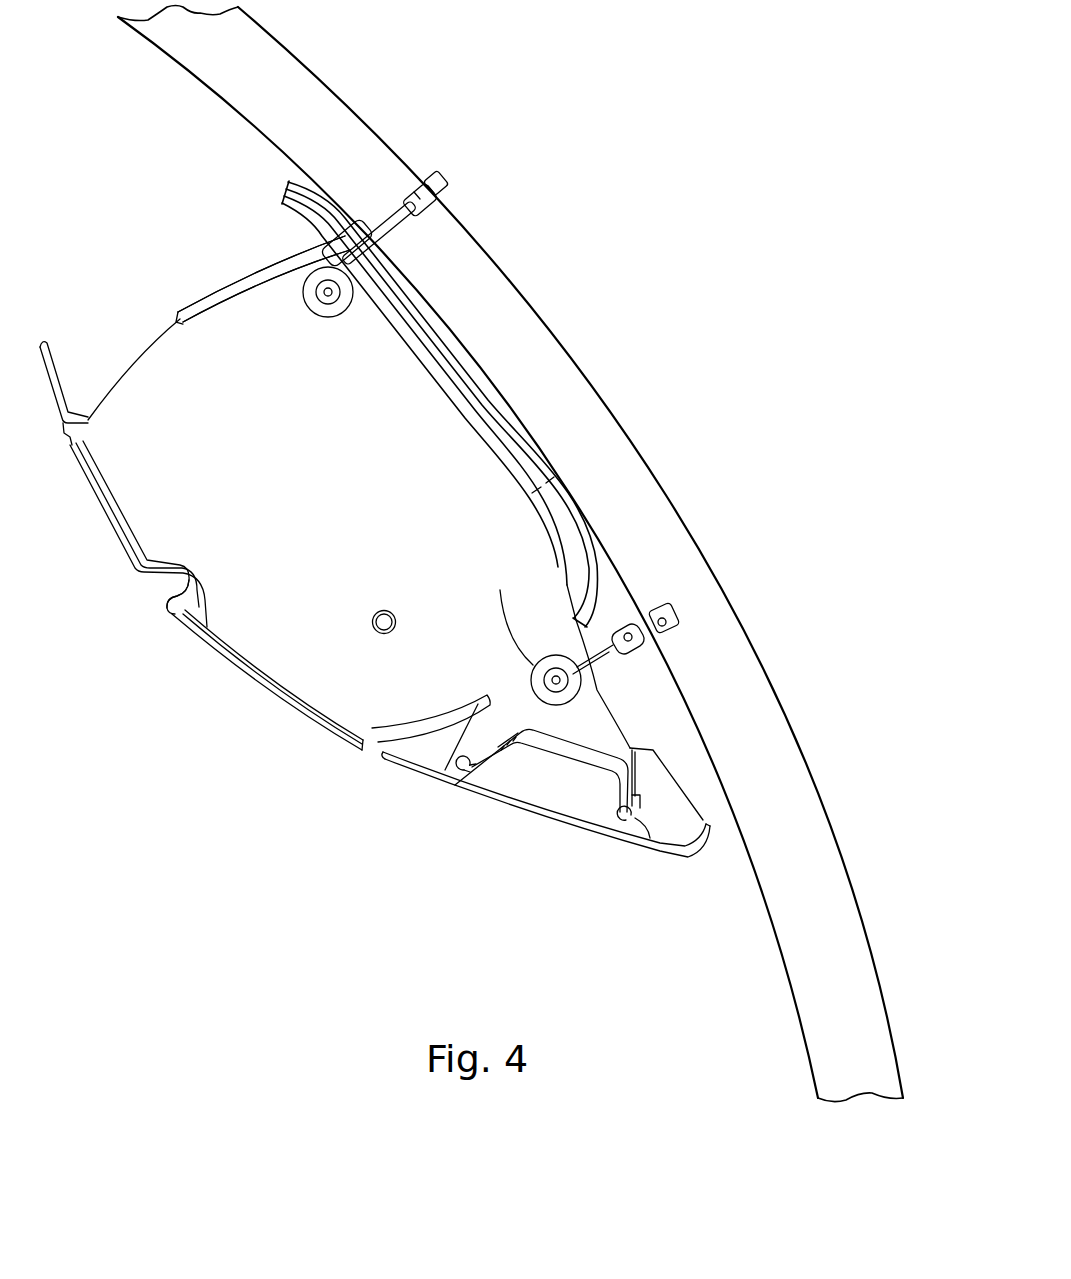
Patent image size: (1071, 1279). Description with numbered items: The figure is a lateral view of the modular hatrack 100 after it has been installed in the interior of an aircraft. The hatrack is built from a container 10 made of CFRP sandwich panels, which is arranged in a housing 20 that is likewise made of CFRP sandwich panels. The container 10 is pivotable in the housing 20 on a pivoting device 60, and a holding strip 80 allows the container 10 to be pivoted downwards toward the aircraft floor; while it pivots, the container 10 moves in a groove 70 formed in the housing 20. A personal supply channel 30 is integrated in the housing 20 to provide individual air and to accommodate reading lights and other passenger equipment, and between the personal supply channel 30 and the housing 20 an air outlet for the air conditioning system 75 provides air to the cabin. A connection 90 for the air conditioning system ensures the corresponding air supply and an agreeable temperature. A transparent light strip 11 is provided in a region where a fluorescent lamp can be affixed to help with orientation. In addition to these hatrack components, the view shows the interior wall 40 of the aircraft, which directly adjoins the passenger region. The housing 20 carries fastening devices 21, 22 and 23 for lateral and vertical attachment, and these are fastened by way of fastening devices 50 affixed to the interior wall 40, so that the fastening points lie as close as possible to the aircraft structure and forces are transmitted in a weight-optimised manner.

The container 10 is at (113, 548).
The transparent light strip 11 is at (53, 382).
The housing 20 is at (236, 469).
The fastening device 21 is at (550, 658).
The fastening device 22 is at (320, 278).
The fastening device 23 is at (405, 185).
The personal supply channel 30 is at (552, 797).
The interior wall 40 is at (775, 928).
The fastening device 50 is at (449, 184).
The pivoting device 60 is at (377, 610).
The groove 70 is at (420, 752).
The air outlet for the air conditioning system 75 is at (465, 770).
The holding strip 80 is at (174, 596).
The connection for the air conditioning system 90 is at (478, 397).
The modular hatrack 100 is at (173, 270).